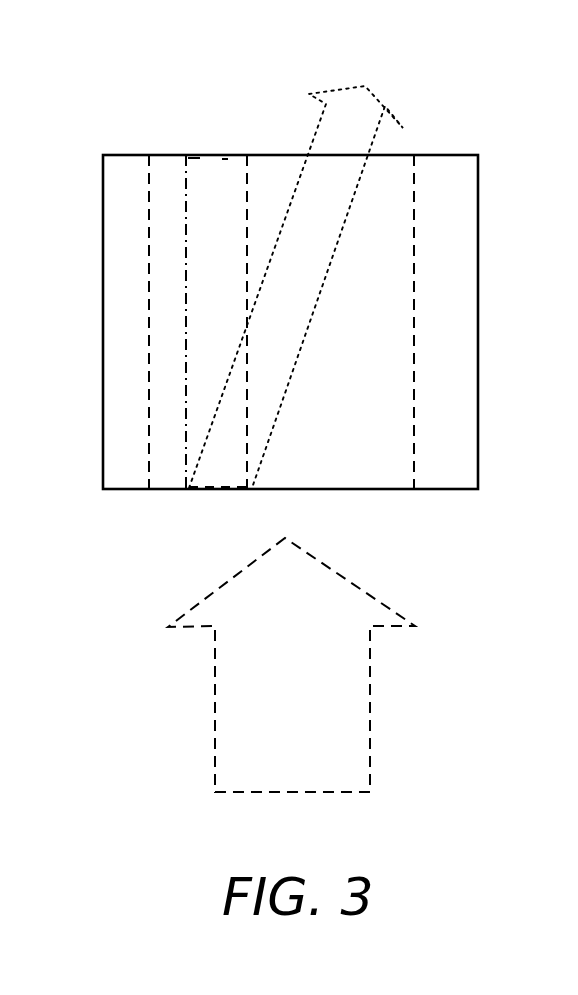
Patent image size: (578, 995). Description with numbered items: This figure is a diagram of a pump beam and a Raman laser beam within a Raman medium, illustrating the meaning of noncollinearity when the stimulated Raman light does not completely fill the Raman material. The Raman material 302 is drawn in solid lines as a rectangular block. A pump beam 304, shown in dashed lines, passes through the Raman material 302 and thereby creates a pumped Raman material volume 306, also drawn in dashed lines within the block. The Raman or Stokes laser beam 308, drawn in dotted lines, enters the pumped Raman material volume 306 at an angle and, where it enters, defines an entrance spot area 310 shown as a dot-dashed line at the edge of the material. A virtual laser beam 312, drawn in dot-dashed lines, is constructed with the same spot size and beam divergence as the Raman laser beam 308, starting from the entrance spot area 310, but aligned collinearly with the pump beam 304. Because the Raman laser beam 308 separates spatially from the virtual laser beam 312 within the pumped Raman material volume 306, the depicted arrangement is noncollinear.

The Raman material 302 is at (478, 355).
The pump beam 304 is at (370, 720).
The pumped Raman material volume 306 is at (414, 275).
The Raman laser beam 308 is at (375, 95).
The entrance spot area 310 is at (218, 492).
The virtual laser beam 312 is at (223, 157).